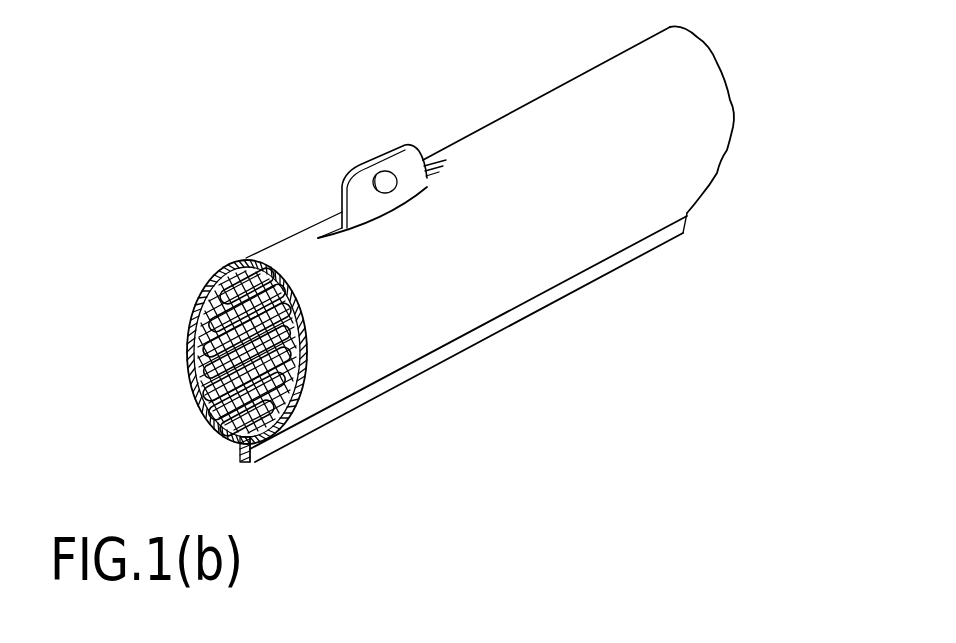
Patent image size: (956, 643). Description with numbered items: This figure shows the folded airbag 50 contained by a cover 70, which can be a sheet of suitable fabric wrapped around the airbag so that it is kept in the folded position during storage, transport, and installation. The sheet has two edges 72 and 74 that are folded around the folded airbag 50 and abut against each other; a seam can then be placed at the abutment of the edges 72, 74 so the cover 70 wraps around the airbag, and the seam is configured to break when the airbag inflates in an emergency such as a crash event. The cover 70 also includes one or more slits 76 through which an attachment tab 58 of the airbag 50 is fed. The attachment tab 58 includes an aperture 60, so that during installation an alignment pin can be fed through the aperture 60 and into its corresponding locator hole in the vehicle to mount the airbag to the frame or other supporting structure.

The airbag 50 is at (190, 343).
The attachment tab 58 is at (402, 147).
The aperture 60 is at (373, 188).
The cover 70 is at (692, 75).
The edge 72 is at (273, 453).
The edge 74 is at (243, 460).
The slit 76 is at (427, 187).